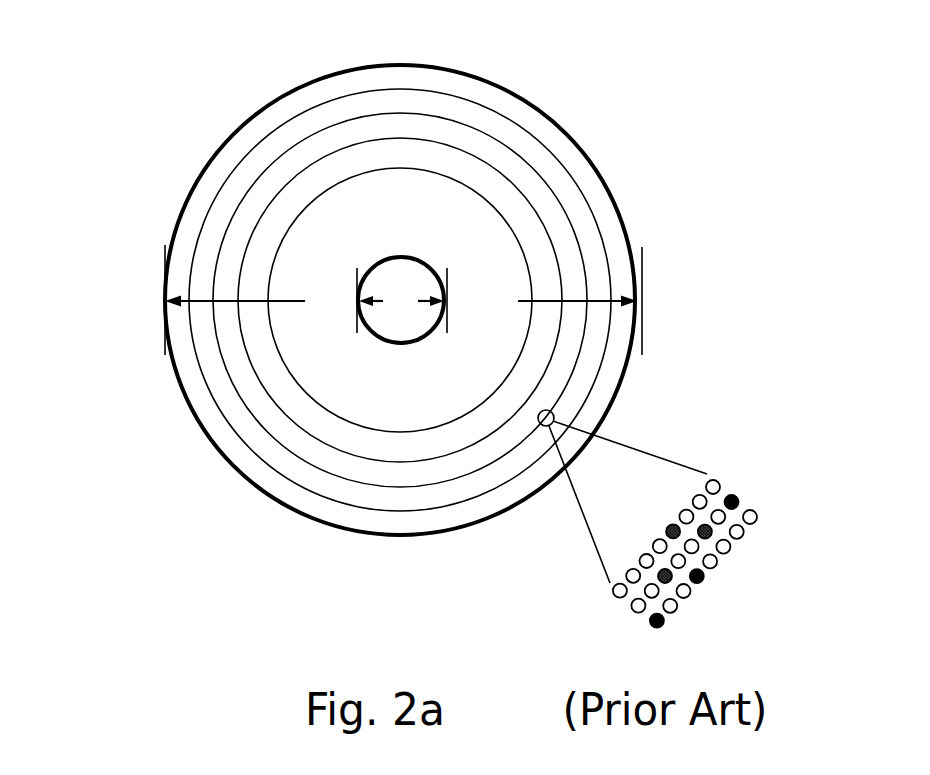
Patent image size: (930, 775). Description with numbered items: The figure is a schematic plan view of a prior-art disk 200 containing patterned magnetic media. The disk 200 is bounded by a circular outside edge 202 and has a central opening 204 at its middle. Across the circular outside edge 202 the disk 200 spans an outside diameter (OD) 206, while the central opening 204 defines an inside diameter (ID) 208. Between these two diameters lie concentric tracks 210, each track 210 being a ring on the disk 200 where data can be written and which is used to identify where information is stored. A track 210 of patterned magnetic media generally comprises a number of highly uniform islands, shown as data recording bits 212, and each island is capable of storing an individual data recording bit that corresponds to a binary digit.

The disk 200 is at (101, 70).
The circular outside edge 202 is at (209, 166).
The central opening 204 is at (427, 257).
The outside diameter (OD) 206 is at (643, 275).
The inside diameter (ID) 208 is at (402, 302).
The track 210 is at (570, 222).
The data recording bits 212 is at (750, 509).